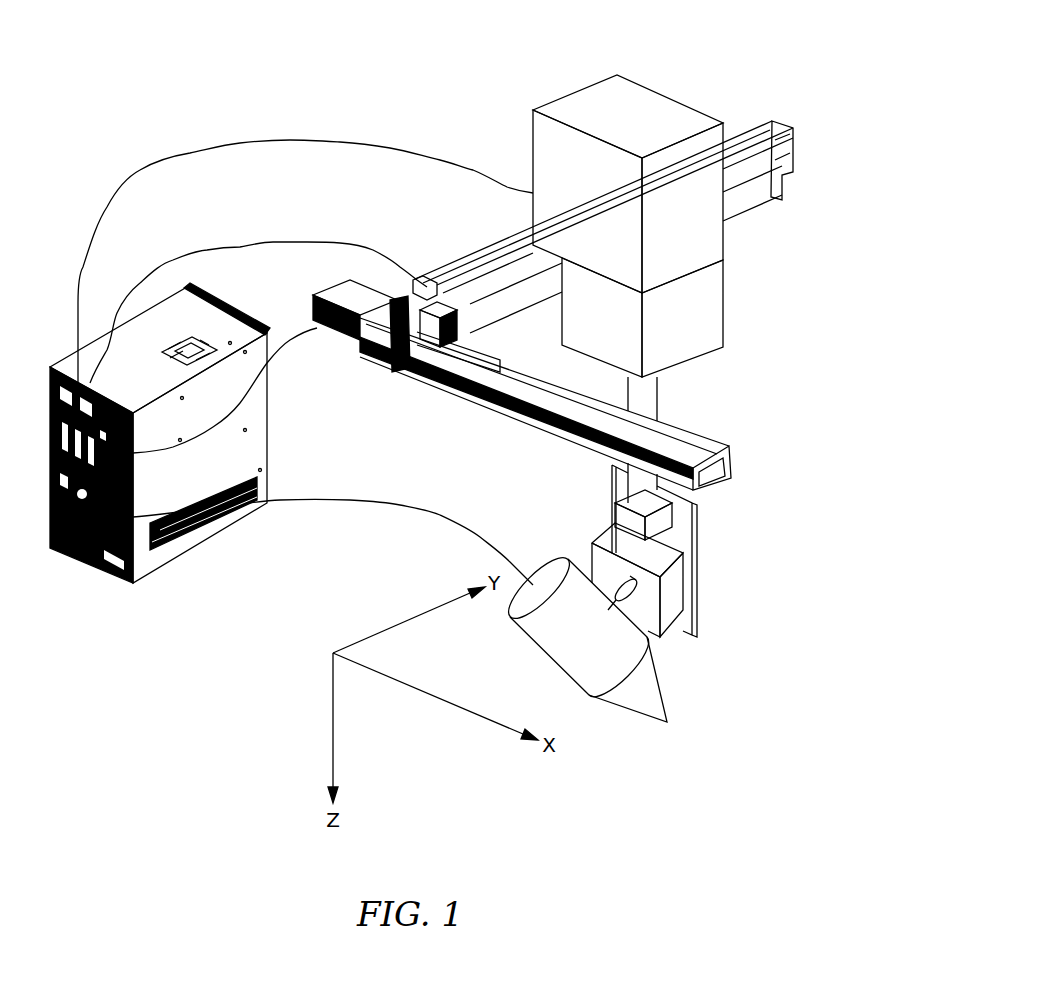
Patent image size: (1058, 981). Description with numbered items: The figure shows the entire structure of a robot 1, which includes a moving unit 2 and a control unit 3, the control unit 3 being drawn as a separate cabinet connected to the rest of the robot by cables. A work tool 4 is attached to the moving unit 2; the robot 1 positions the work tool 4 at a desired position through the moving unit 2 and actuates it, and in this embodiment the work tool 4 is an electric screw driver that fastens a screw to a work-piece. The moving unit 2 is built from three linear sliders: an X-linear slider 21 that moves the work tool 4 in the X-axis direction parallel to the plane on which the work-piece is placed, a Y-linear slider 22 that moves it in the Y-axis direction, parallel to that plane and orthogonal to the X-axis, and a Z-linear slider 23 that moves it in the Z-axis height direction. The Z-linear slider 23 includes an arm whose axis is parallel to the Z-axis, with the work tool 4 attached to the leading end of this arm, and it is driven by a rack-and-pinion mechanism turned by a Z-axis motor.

The robot 1 is at (358, 104).
The moving unit 2 is at (575, 271).
The control device (computer) 3 is at (174, 545).
The work tool 4 is at (643, 680).
The X-linear slider 21 is at (483, 403).
The Y-linear slider 22 is at (757, 143).
The Z-linear slider 23 is at (603, 92).